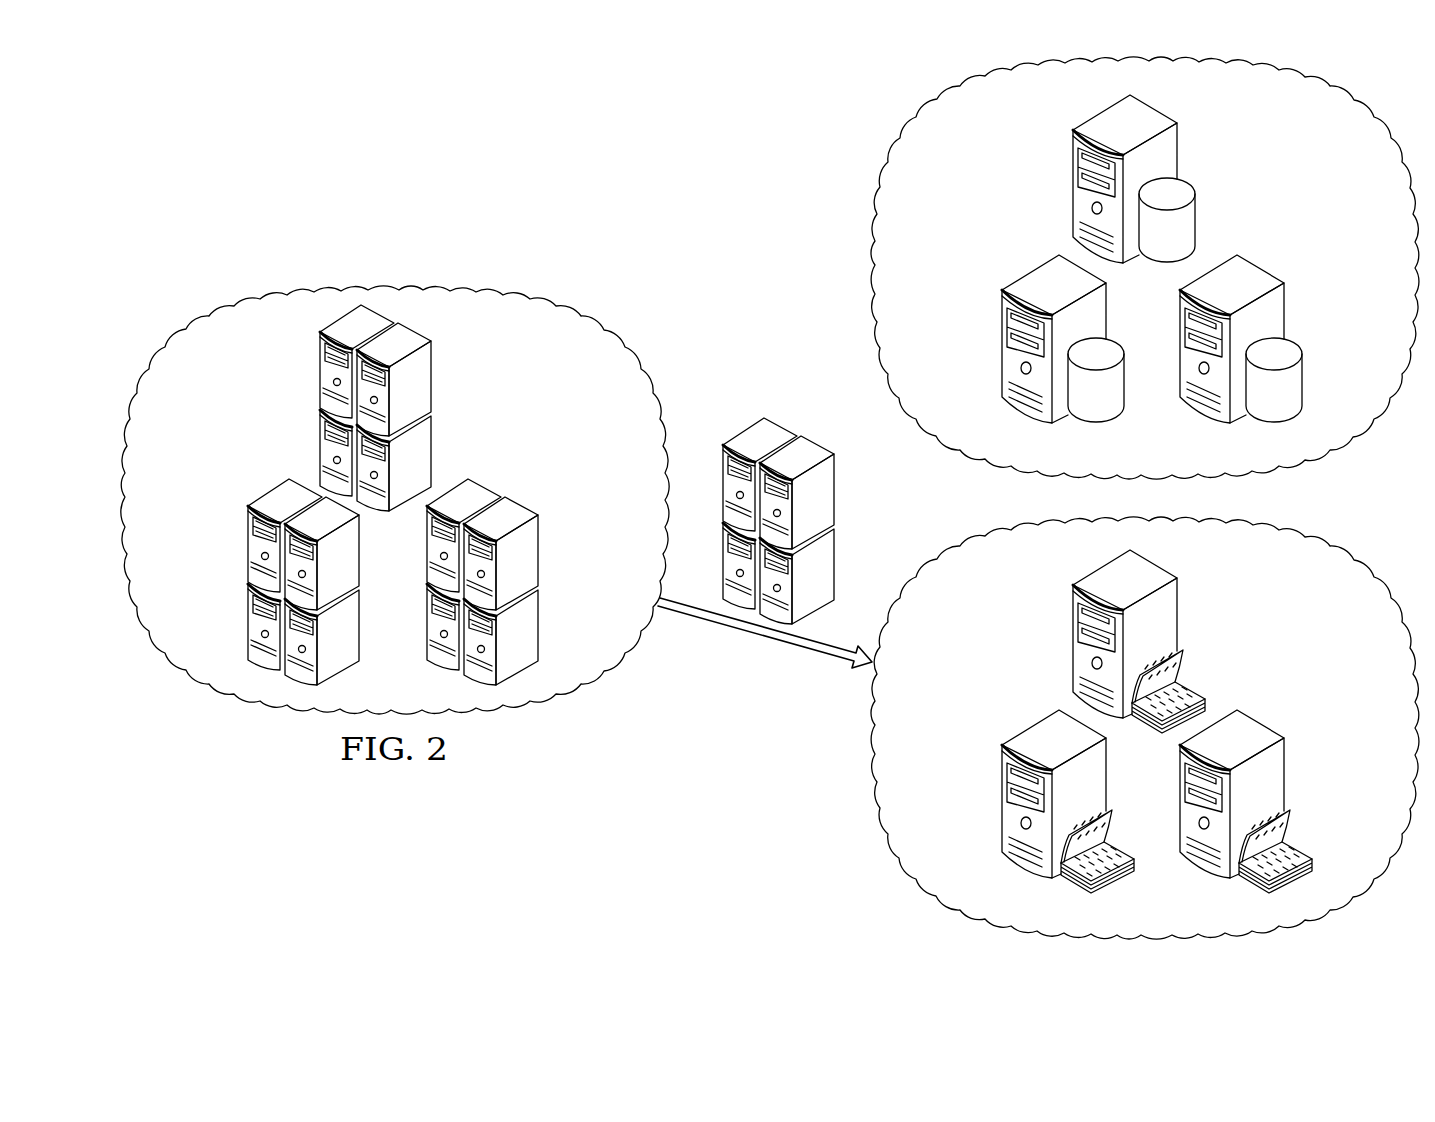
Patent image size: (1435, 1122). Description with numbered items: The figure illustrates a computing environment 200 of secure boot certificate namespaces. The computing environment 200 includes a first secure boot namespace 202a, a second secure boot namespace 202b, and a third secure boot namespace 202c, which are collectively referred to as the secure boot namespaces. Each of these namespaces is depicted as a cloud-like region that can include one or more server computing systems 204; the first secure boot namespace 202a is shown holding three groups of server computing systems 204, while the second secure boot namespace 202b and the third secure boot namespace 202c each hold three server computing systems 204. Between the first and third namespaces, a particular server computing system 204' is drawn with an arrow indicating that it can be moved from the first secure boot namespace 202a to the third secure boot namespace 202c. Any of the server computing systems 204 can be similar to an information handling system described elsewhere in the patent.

The computing environment 200 is at (393, 202).
The first secure boot namespace 202a is at (165, 338).
The second secure boot namespace 202b is at (1368, 112).
The third secure boot namespace 202c is at (1372, 888).
The server computing system 204 is at (761, 494).
The particular server computing system 204' is at (778, 485).